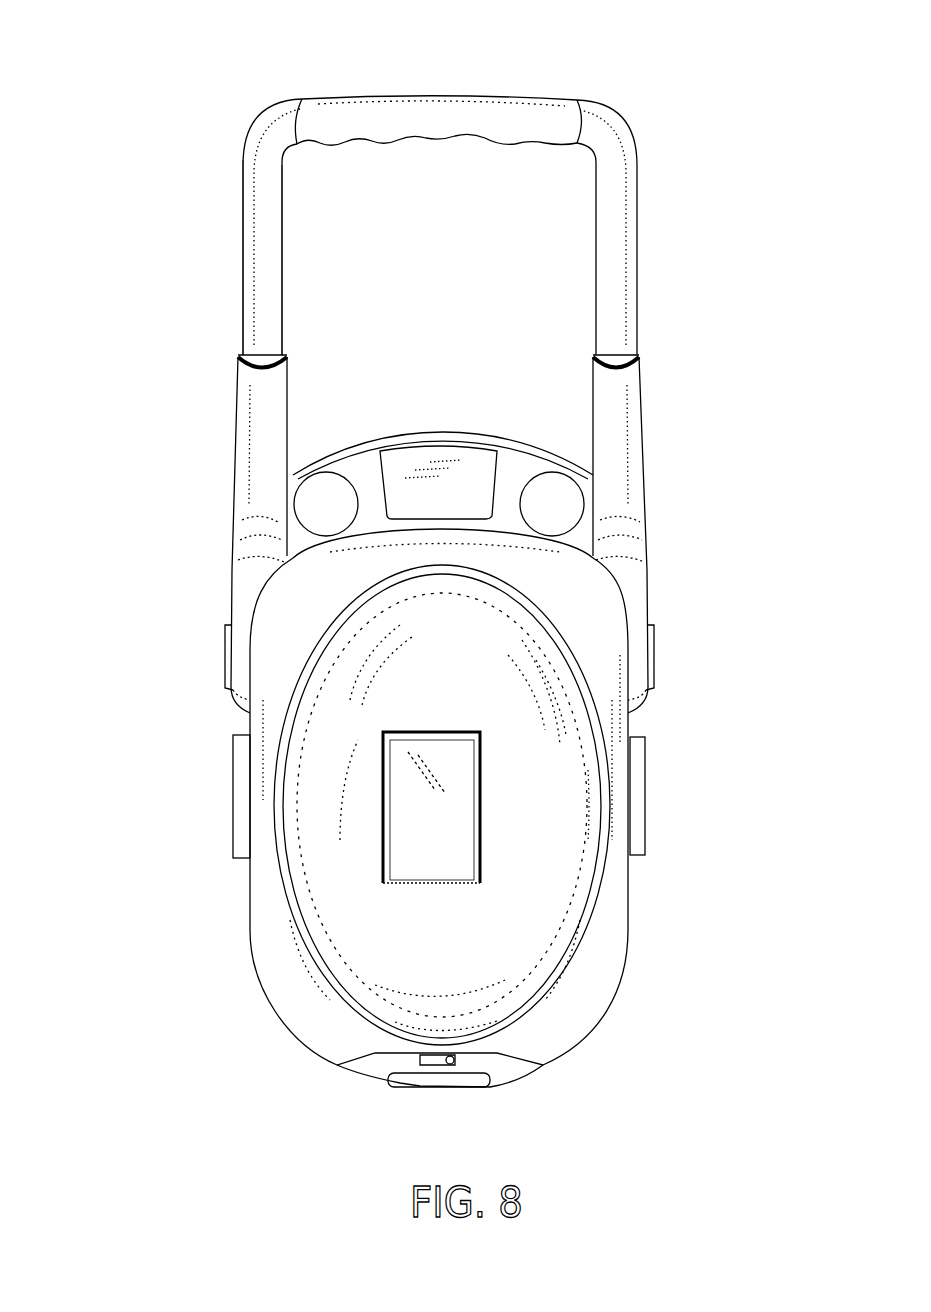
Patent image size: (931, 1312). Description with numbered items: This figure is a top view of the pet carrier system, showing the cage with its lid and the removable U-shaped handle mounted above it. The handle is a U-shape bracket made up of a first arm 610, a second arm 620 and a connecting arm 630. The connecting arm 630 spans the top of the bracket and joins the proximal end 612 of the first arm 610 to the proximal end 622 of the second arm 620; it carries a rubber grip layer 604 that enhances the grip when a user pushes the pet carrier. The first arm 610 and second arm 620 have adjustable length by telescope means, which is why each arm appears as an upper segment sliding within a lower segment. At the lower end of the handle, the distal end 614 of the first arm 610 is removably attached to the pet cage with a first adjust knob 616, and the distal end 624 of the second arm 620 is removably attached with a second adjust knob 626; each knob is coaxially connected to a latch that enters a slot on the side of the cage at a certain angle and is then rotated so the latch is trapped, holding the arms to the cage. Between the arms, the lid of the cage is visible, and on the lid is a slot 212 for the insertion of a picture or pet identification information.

The rubber grip layer 604 is at (383, 122).
The connecting arm 630 is at (292, 124).
The proximal end of the second arm 622 is at (615, 138).
The proximal end of the first arm 612 is at (262, 172).
The first arm 610 is at (260, 400).
The second arm 620 is at (630, 390).
The first adjust knob 616 is at (224, 652).
The second adjust knob 626 is at (655, 645).
The distal end of the first arm 614 is at (238, 700).
The distal end of the second arm 624 is at (637, 700).
The slot 212 is at (462, 818).